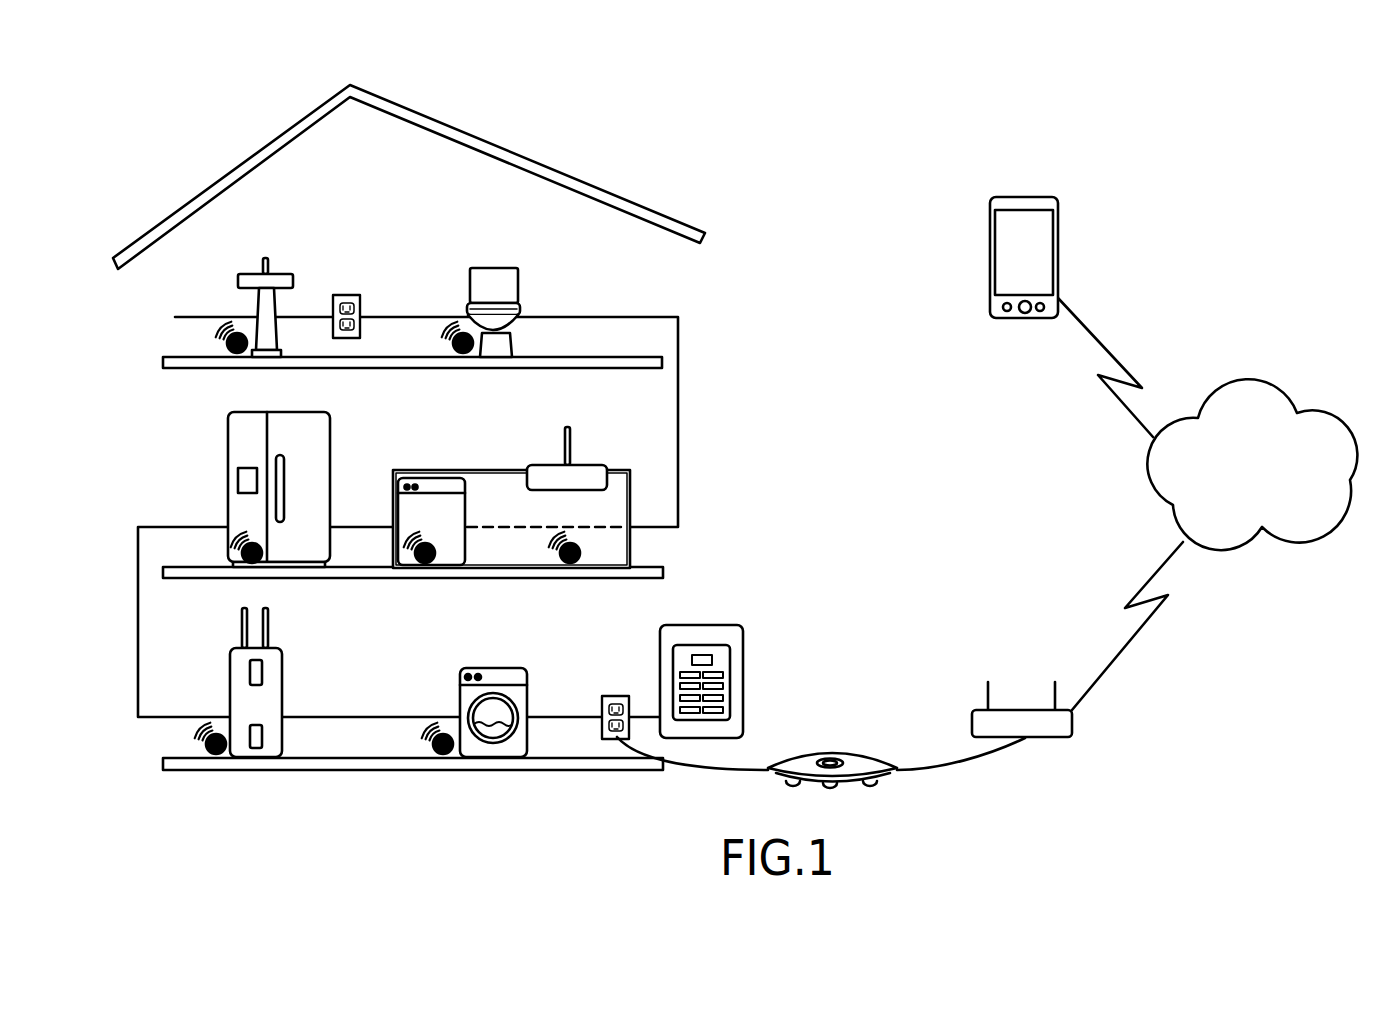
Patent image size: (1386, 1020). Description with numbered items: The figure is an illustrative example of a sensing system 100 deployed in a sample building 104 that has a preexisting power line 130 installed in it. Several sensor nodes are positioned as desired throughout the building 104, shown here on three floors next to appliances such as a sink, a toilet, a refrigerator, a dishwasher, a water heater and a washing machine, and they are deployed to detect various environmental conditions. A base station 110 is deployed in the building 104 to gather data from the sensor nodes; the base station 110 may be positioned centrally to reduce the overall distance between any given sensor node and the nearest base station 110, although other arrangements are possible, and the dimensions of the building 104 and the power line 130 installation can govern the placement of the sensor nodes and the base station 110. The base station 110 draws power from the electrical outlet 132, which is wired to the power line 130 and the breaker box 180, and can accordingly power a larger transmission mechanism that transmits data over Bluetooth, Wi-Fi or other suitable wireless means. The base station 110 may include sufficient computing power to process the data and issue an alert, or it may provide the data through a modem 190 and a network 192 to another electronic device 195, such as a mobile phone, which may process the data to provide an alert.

The sensing system 100 is at (1079, 59).
The building 104 is at (785, 203).
The base station 110 is at (848, 755).
The power line 130 is at (678, 463).
The electrical outlet 132 is at (613, 696).
The breaker box 180 is at (743, 663).
The modem 190 is at (1050, 738).
The network 192 is at (1248, 378).
The electronic device 195 is at (1058, 240).